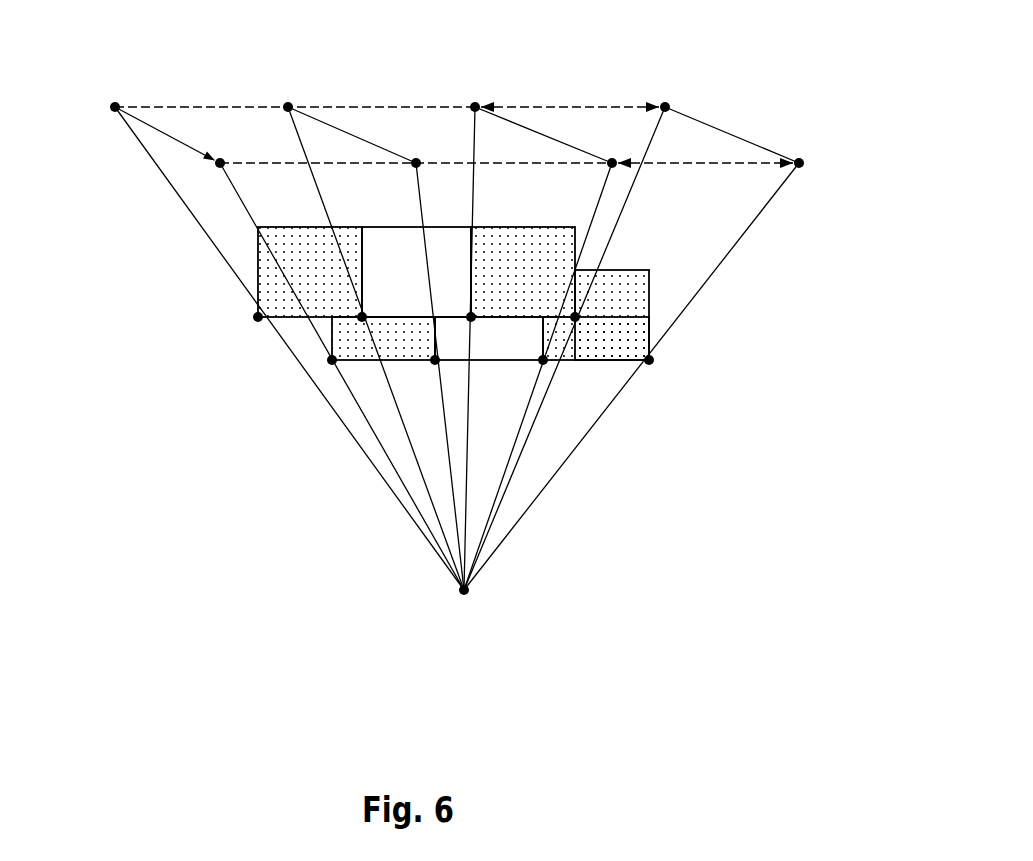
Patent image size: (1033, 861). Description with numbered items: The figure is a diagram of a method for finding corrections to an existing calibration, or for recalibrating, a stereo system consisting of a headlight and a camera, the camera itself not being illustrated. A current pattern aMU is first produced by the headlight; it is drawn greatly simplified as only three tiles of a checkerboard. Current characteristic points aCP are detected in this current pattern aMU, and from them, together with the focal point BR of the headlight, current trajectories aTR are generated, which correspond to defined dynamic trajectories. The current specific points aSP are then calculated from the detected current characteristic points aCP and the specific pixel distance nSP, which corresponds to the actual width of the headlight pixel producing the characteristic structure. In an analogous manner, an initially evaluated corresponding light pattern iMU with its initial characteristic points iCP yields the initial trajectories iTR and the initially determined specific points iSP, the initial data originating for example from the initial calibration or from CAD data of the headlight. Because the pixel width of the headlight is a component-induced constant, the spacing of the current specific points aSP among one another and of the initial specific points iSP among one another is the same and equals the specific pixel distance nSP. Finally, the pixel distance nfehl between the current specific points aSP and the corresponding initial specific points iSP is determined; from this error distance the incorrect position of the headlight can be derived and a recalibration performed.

The current specific points aSP is at (115, 105).
The initially determined specific points iSP is at (220, 162).
The specific pixel distance nSP is at (600, 107).
The pixel distance n_error nfehl is at (177, 139).
The current trajectories aTR is at (310, 180).
The initial trajectories iTR is at (517, 440).
The current pattern aMU is at (578, 216).
The initially evaluated corresponding light pattern iMU is at (663, 297).
The current characteristic points aCP is at (258, 320).
The initial characteristic points iCP is at (332, 363).
The focal point of the headlight BR is at (465, 597).